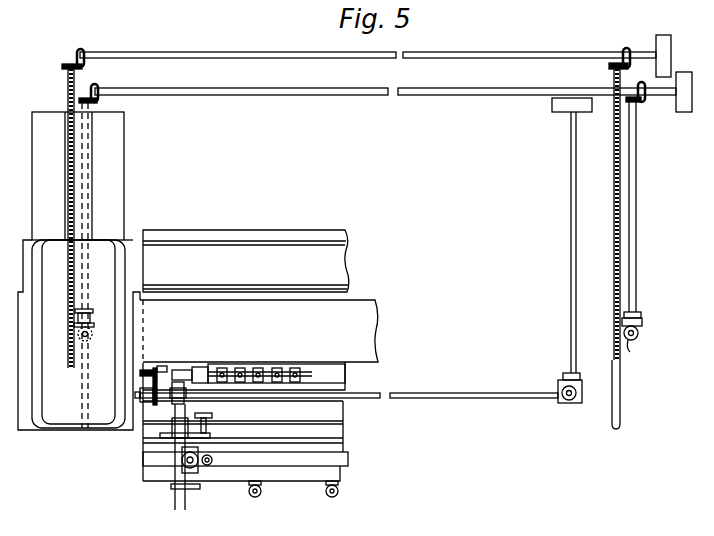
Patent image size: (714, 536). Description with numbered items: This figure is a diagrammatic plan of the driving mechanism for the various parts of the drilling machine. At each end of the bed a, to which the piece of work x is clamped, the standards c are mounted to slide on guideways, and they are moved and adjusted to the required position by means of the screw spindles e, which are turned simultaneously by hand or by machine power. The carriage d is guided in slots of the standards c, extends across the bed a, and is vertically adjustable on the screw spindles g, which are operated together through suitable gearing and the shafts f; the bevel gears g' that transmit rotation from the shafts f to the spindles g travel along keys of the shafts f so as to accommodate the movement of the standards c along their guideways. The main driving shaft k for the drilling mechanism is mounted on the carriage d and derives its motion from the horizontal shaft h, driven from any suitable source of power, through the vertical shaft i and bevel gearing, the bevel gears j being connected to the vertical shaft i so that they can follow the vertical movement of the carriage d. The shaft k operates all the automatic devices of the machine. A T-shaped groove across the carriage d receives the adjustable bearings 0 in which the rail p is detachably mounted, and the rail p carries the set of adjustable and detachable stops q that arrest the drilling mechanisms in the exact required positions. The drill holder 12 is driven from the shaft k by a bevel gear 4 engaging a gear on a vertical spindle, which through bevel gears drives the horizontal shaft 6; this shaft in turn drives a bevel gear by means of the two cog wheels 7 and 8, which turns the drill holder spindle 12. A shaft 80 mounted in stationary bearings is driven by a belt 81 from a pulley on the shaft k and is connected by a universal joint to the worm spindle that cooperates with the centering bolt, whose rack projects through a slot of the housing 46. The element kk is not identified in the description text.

The bed a is at (246, 261).
The carriage d is at (259, 390).
The standards c is at (79, 271).
The screw spindles e is at (68, 96).
The shafts f is at (90, 173).
The screw spindles g is at (360, 351).
The bevel gears g' is at (371, 321).
The horizontal shaft h is at (571, 237).
The vertical shaft i is at (581, 397).
The bevel gears j is at (566, 408).
The main driving shaft k is at (363, 400).
The piece of work x is at (346, 457).
The shaft 80 is at (157, 368).
The belt 81 is at (148, 372).
The bevel gear 4 is at (175, 374).
The rail p is at (178, 370).
The bearings 0 is at (200, 369).
The housing 46 is at (233, 367).
The stops q is at (306, 364).
The horizontal shaft 6 is at (176, 427).
The cog wheel 7 is at (195, 486).
The cog wheel 8 is at (172, 478).
The drill holder 12 is at (182, 461).
The pinion kk is at (208, 466).